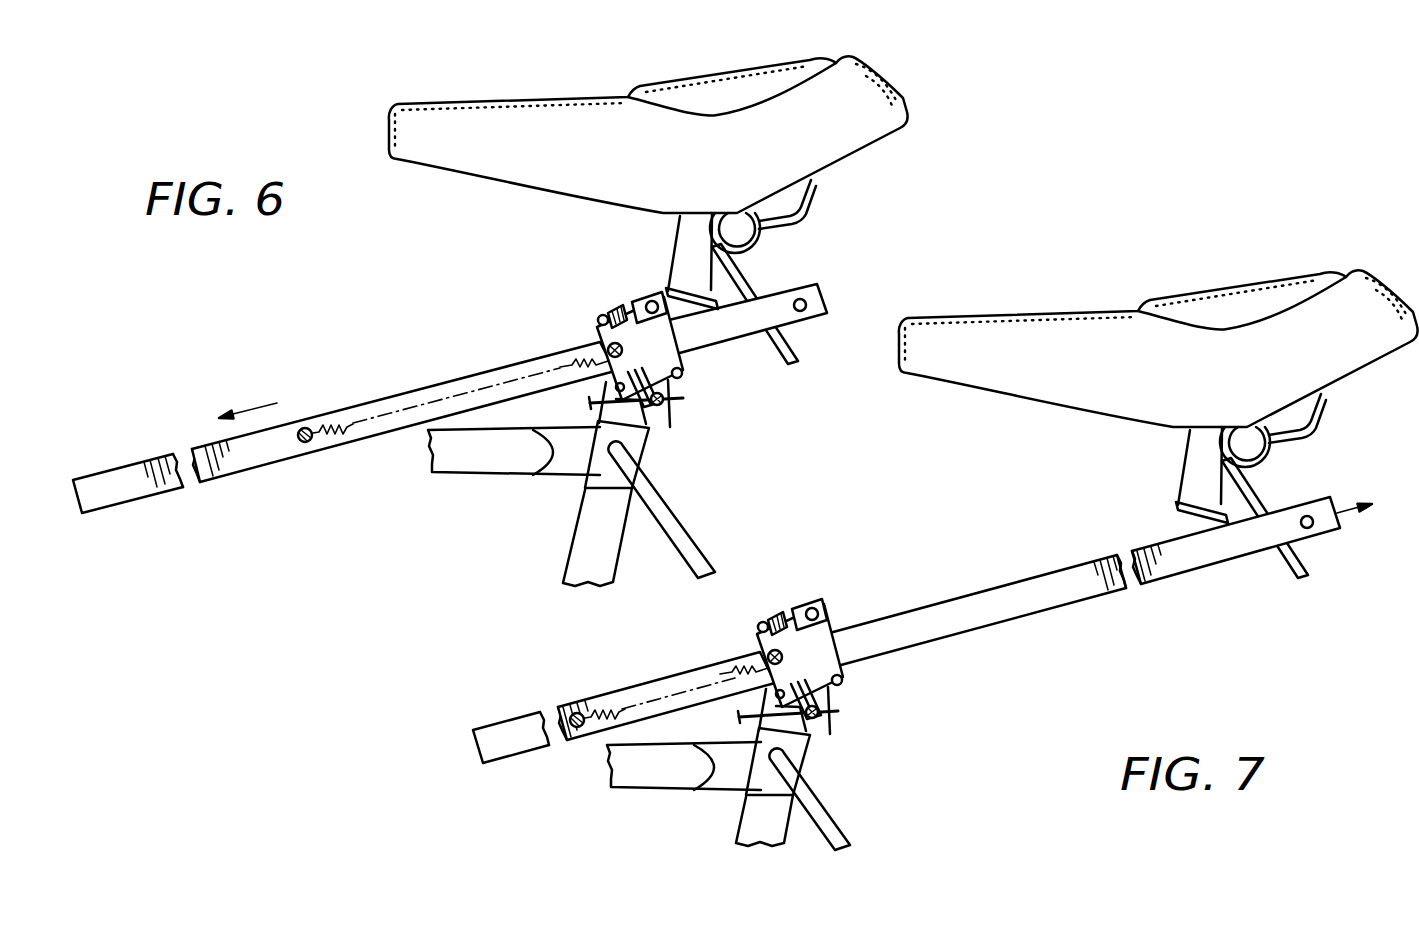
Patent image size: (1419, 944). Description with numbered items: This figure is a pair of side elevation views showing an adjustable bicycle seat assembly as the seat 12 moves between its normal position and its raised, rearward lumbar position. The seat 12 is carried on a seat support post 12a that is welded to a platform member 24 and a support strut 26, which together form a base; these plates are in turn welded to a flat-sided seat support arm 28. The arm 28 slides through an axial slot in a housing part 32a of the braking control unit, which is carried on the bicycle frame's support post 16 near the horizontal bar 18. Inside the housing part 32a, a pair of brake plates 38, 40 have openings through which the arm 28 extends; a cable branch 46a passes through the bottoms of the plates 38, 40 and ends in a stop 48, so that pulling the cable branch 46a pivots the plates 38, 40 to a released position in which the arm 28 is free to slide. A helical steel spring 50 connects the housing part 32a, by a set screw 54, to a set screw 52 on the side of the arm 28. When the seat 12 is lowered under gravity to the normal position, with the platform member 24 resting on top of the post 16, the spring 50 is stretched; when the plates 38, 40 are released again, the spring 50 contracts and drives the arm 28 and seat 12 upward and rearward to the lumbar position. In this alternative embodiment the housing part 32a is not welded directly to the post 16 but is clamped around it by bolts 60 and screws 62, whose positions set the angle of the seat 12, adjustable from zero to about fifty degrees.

In FIG. 6, the bicycle seat 12 is at (840, 127).
In FIG. 7, the bicycle seat 12 is at (1105, 353).
In FIG. 6, the seat support post 12a is at (686, 247).
In FIG. 7, the seat support post 12a is at (1192, 475).
In FIG. 6, the support post 16 is at (580, 553).
In FIG. 7, the support post 16 is at (777, 828).
In FIG. 6, the horizontal bar 18 is at (470, 465).
In FIG. 7, the horizontal bar 18 is at (645, 787).
In FIG. 6, the platform member 24 is at (710, 325).
In FIG. 7, the platform member 24 is at (1200, 532).
In FIG. 6, the support strut 26 is at (748, 277).
In FIG. 7, the support strut 26 is at (1253, 492).
In FIG. 6, the seat support arm 28 is at (690, 338).
In FIG. 7, the seat support arm 28 is at (1022, 598).
In FIG. 6, the housing part 32a is at (683, 358).
In FIG. 7, the housing part 32a is at (845, 628).
In FIG. 6, the brake plate 38 is at (598, 318).
In FIG. 7, the brake plate 38 is at (816, 732).
In FIG. 6, the brake plate 40 is at (620, 308).
In FIG. 7, the brake plate 40 is at (835, 722).
In FIG. 6, the cable branch 46a is at (590, 402).
In FIG. 7, the cable branch 46a is at (737, 724).
In FIG. 6, the retaining element or stop 48 is at (660, 410).
In FIG. 7, the retaining element or stop 48 is at (835, 728).
In FIG. 6, the helical steel spring 50 is at (441, 397).
In FIG. 7, the helical steel spring 50 is at (650, 693).
In FIG. 6, the set screw 52 is at (307, 443).
In FIG. 7, the set screw 52 is at (575, 714).
In FIG. 6, the set screw 54 is at (604, 340).
In FIG. 7, the set screw 54 is at (795, 610).
In FIG. 6, the bolt 60 is at (651, 300).
In FIG. 7, the bolt 60 is at (807, 606).
In FIG. 6, the screw 62 is at (597, 318).
In FIG. 7, the screw 62 is at (760, 630).